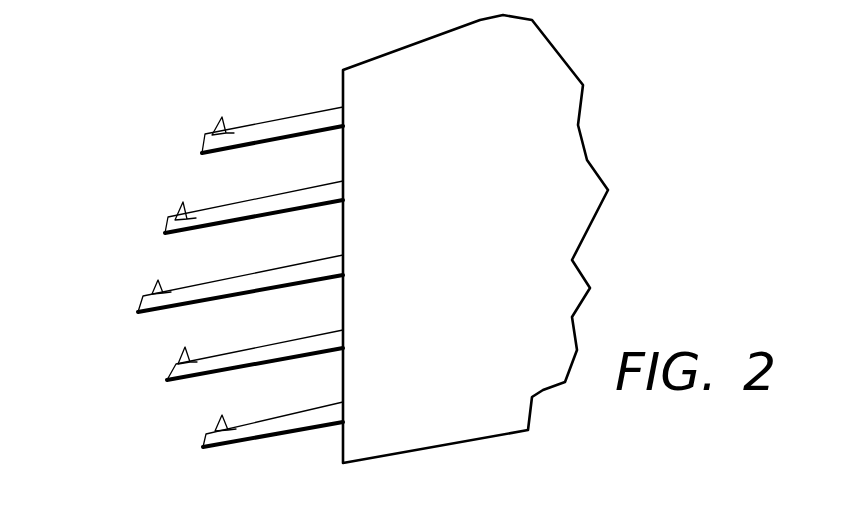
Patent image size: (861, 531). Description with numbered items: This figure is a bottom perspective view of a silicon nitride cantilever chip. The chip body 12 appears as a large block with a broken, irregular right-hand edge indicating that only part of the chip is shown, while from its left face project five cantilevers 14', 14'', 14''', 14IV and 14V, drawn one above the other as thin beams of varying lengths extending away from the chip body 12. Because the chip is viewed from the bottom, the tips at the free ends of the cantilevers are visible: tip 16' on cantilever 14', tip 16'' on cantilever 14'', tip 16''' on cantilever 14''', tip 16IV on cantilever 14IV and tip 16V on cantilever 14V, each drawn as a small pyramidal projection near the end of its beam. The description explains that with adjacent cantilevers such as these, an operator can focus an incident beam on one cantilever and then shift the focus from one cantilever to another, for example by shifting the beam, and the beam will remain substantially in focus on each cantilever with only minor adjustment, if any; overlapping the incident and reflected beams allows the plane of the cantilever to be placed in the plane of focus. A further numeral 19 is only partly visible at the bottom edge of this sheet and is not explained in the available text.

The body / base member 12 is at (502, 372).
The cantilever 14' is at (272, 87).
The cantilever 14'' is at (228, 185).
The cantilever 14''' is at (205, 268).
The cantilever 14IV is at (217, 363).
The cantilever 14V is at (263, 434).
The tip 16' is at (167, 111).
The tip 16'' is at (121, 198).
The tip 16''' is at (99, 278).
The tip 16IV is at (175, 368).
The tip 16V is at (220, 420).
The partially visible numeral 19 is at (702, 524).